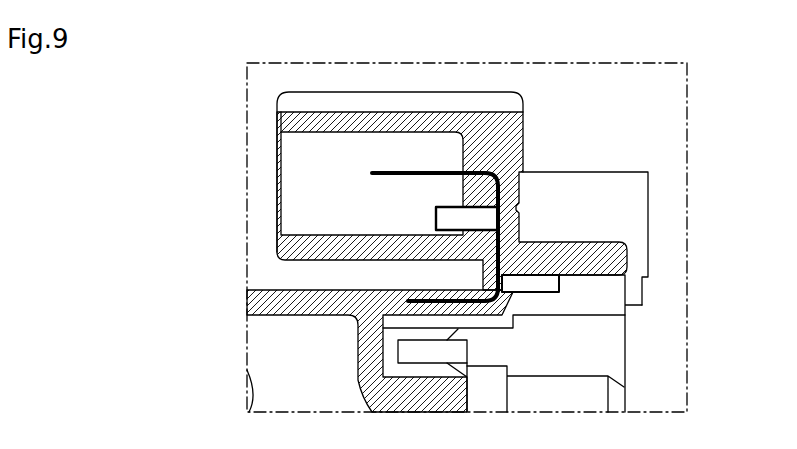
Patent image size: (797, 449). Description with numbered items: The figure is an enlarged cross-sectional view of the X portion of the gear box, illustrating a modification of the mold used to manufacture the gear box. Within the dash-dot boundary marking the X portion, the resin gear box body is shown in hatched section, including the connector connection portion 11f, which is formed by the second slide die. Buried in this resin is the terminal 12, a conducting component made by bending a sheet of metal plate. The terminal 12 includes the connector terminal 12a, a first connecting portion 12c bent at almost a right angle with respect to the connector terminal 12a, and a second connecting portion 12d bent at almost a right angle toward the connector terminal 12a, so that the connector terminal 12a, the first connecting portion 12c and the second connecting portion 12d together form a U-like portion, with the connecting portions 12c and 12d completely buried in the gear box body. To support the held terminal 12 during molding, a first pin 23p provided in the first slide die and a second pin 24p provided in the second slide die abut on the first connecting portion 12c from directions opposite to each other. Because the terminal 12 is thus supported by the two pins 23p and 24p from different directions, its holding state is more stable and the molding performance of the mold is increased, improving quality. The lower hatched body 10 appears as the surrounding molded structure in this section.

The housing body 10 is at (641, 365).
The connector connection portion 11f is at (293, 148).
The terminal 12 is at (394, 160).
The connector terminal 12a is at (400, 171).
The first connecting portion 12c is at (521, 241).
The second connecting portion 12d is at (414, 301).
The first pin 23p is at (560, 285).
The second pin 24p is at (436, 220).
The X portion X is at (689, 77).